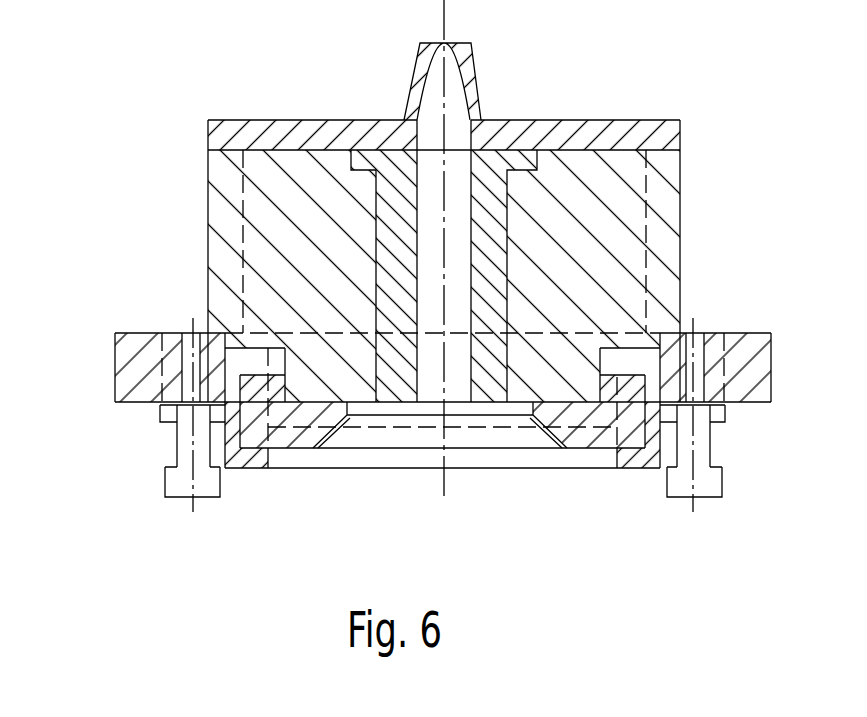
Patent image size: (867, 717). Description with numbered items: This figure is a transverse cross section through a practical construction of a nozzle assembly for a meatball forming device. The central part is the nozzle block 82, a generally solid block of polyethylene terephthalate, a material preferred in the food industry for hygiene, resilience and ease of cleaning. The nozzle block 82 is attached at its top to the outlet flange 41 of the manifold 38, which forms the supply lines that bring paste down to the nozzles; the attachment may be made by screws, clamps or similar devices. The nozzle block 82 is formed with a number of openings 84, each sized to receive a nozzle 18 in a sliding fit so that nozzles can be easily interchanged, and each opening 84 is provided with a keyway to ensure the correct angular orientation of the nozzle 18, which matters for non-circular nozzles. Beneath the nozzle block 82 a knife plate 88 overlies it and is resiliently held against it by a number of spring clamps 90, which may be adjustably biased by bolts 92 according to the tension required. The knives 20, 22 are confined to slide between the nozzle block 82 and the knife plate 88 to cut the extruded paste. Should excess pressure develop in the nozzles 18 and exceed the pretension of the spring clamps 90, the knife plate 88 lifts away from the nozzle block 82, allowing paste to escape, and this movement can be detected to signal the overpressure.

The nozzle 18 is at (395, 218).
The knife 20 is at (331, 470).
The knife 22 is at (417, 402).
The manifold 38 is at (471, 43).
The outlet flange 41 is at (680, 133).
The nozzle block 82 is at (680, 226).
The opening 84 is at (375, 258).
The knife plate 88 is at (583, 452).
The spring clamp 90 is at (635, 472).
The bolt 92 is at (717, 465).